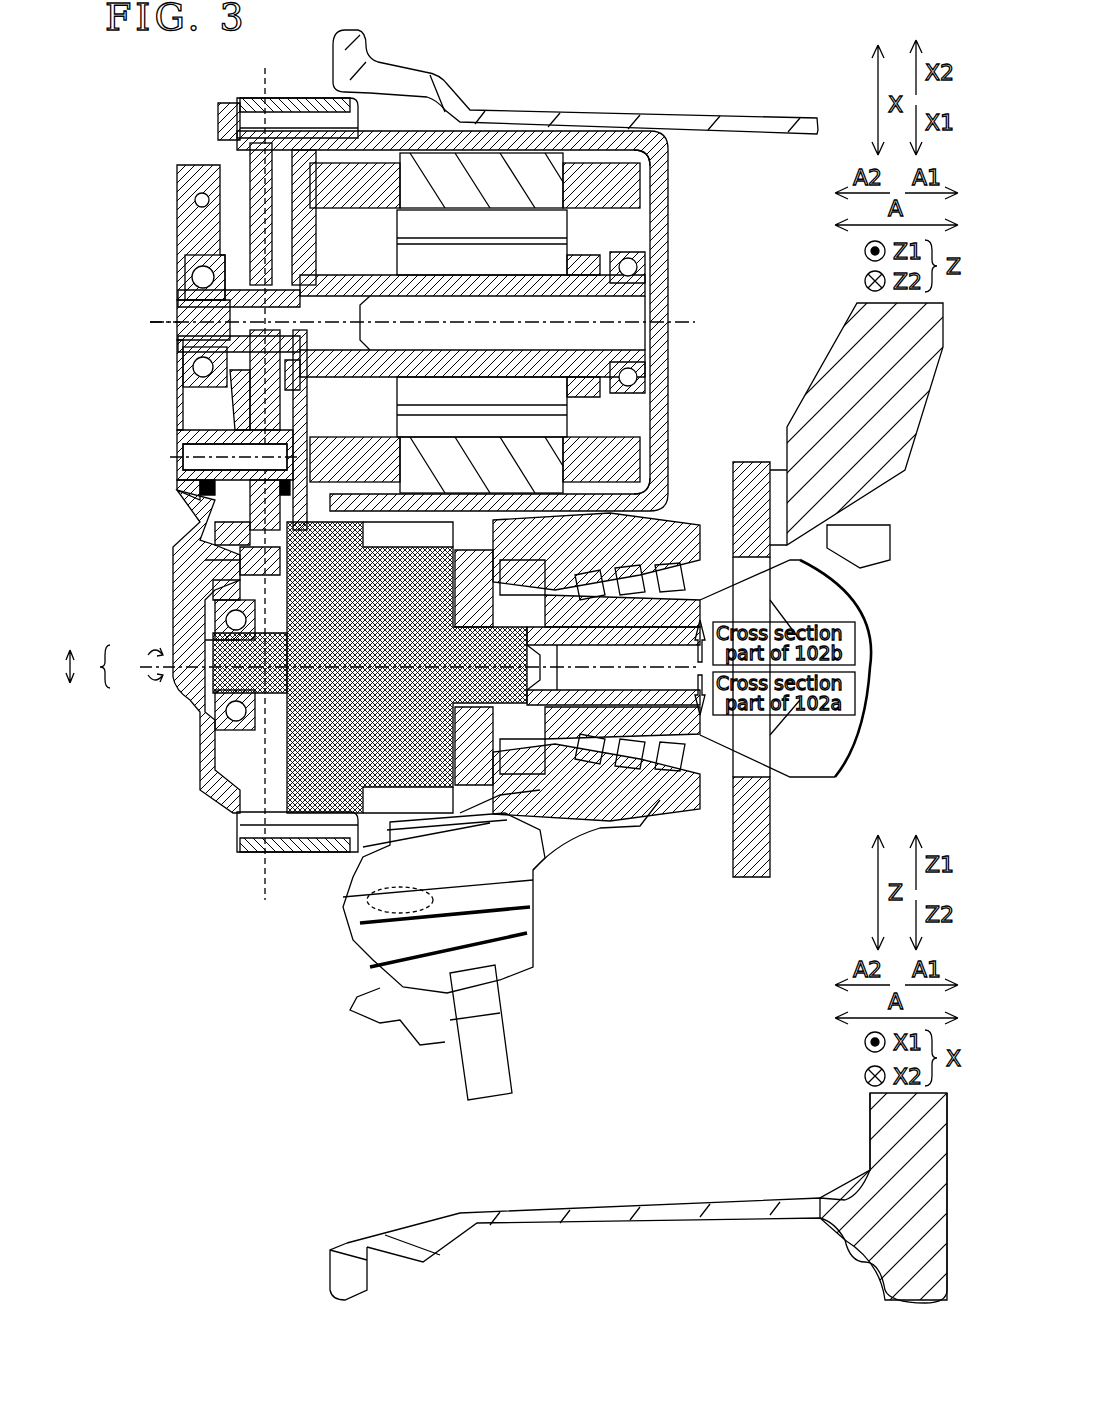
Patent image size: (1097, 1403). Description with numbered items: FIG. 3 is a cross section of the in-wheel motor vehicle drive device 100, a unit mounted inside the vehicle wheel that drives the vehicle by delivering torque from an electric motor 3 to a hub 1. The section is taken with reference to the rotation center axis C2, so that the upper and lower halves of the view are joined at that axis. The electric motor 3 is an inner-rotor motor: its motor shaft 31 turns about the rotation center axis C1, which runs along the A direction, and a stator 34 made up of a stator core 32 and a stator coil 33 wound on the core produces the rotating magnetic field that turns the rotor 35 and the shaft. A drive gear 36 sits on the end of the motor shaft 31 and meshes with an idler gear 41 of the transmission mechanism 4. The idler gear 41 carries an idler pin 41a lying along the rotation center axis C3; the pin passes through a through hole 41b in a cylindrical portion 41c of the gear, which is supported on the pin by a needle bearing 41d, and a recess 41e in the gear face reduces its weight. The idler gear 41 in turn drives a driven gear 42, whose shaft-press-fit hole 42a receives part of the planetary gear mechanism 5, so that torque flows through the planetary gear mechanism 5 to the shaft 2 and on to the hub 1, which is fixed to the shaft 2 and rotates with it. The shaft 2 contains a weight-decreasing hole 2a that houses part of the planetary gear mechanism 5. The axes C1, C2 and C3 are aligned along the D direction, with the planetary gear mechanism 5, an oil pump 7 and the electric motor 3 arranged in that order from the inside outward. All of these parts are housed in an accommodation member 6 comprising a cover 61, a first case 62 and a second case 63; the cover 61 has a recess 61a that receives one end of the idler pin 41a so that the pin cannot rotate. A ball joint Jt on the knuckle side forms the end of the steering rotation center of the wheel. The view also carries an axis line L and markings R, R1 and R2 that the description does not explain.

The in-wheel motor vehicle drive device 100 is at (165, 144).
The hub 1 is at (790, 592).
The shaft 2 is at (680, 795).
The weight-decreasing hole 2a is at (578, 650).
The electric motor 3 is at (660, 222).
The motor shaft 31 is at (660, 287).
The stator core 32 is at (397, 453).
The stator coil 33 is at (656, 184).
The stator 34 is at (656, 445).
The rotor 35 is at (584, 417).
The drive gear 36 is at (250, 288).
The transmission mechanism 4 is at (193, 498).
The idler gear 41 is at (205, 370).
The idler pin 41a is at (232, 425).
The through hole 41b is at (298, 395).
The cylindrical portion 41c is at (200, 488).
The needle bearing 41d is at (183, 475).
The recess 41e is at (250, 386).
The driven gear 42 is at (240, 562).
The shaft-press-fit hole 42a is at (215, 598).
The planetary gear mechanism 5 is at (382, 515).
The accommodation member 6 is at (186, 526).
The cover 61 is at (205, 537).
The recess 61a is at (177, 484).
The first case 62 is at (283, 98).
The second case 63 is at (315, 98).
The oil pump 7 is at (177, 352).
The rotation center axis C1 is at (150, 322).
The rotation center axis C2 is at (200, 665).
The rotation center axis C3 is at (170, 457).
The axis L is at (258, 80).
The ball joint Jt is at (545, 930).
The D direction D is at (57, 666).
The region R is at (96, 666).
The rotation direction R1 is at (137, 654).
The rotation direction R2 is at (137, 677).